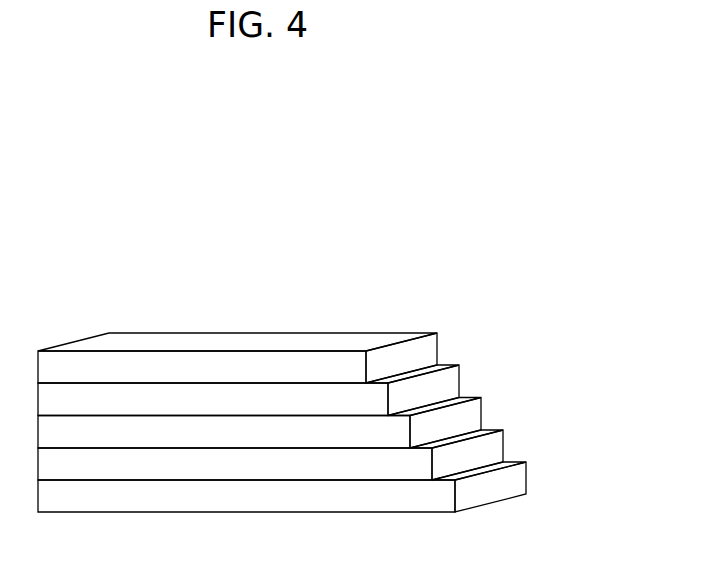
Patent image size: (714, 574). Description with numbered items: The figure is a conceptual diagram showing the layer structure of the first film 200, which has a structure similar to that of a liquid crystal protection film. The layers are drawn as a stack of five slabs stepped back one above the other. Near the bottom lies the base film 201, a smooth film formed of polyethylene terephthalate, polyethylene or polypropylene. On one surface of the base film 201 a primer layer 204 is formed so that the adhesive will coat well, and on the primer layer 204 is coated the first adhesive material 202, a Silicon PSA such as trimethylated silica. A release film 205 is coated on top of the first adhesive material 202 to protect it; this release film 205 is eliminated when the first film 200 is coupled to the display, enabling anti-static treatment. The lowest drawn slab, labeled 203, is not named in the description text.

The first film 200 is at (66, 165).
The release film 205 is at (533, 346).
The first adhesive material 202 is at (533, 379).
The primer layer 204 is at (533, 412).
The base film 201 is at (533, 444).
The third layer (bottom) 203 is at (533, 477).